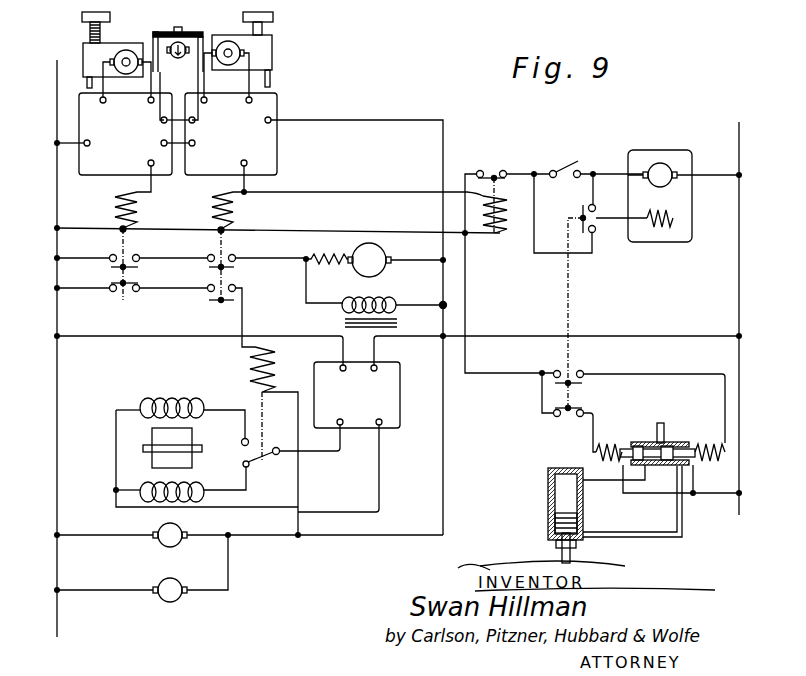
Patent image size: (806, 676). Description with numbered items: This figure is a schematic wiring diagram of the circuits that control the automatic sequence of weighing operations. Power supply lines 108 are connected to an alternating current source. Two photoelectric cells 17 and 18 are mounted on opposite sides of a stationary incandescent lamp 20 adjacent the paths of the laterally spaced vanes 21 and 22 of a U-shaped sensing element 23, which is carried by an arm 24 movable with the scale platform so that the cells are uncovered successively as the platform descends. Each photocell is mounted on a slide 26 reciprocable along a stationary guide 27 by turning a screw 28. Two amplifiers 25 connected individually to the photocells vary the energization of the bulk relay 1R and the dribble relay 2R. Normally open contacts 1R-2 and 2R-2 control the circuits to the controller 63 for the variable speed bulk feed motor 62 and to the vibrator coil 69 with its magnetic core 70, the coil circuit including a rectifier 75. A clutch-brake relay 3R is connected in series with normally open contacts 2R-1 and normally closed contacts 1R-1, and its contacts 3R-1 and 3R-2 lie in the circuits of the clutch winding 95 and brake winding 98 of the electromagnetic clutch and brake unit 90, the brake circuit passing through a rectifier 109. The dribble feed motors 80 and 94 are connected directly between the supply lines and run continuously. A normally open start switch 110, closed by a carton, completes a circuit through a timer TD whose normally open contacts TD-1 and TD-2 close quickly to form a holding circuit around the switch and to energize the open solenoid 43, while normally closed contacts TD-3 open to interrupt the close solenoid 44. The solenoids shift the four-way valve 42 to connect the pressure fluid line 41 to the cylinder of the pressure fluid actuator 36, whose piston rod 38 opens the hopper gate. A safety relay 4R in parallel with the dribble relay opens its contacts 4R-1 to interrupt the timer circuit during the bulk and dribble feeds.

The photoelectric cell 17 is at (127, 50).
The photoelectric cell 18 is at (229, 41).
The stationary incandescent lamp 20 is at (178, 60).
The vane 21 is at (153, 40).
The vane 22 is at (201, 36).
The U-shaped sensing element 23 is at (180, 28).
The arm 24 is at (167, 32).
The amplifiers 25 is at (79, 113).
The slide 26 is at (83, 53).
The stationary guide 27 is at (87, 82).
The screw 28 is at (90, 29).
The pressure fluid actuator 36 is at (548, 500).
The piston rod 38 is at (562, 552).
The pressure fluid line 41 is at (664, 426).
The four-way valve 42 is at (677, 439).
The open solenoid 43 is at (708, 463).
The close solenoid 44 is at (596, 452).
The variable speed motor 62 is at (372, 248).
The controller 63 is at (328, 251).
The coil 69 is at (380, 301).
The magnetic core 70 is at (399, 322).
The rectifier 75 is at (439, 305).
The motor 80 is at (168, 600).
The electromagnetic clutch and brake unit 90 is at (138, 433).
The electric motor 94 is at (165, 545).
The clutch winding 95 is at (180, 399).
The brake winding 98 is at (150, 486).
The power supply lines 108 is at (742, 320).
The rectifier 109 is at (395, 424).
The start switch 110 is at (583, 164).
The bulk relay 1R is at (116, 205).
The normally closed contacts 1R-1 is at (125, 294).
The normally open contacts 1R-2 is at (129, 257).
The dribble relay 2R is at (212, 205).
The normally open contacts 2R-1 is at (214, 301).
The normally open contacts 2R-2 is at (227, 257).
The clutch-brake relay 3R is at (250, 365).
The normally open contacts 3R-1 is at (240, 445).
The normally closed contacts 3R-2 is at (254, 469).
The safety relay 4R is at (497, 236).
The contacts 4R-1 is at (493, 169).
The timer TD is at (694, 150).
The normally open contacts TD-1 is at (582, 216).
The normally open contacts TD-2 is at (578, 372).
The normally closed contacts TD-3 is at (561, 418).